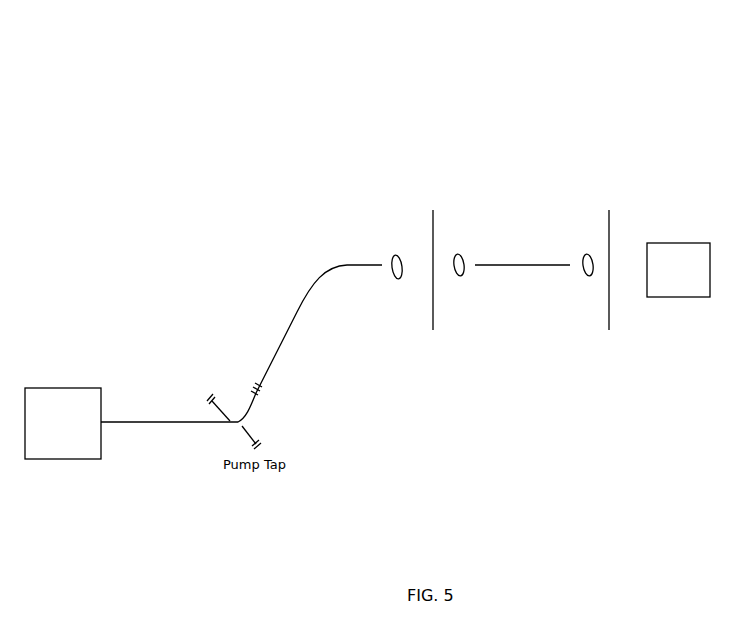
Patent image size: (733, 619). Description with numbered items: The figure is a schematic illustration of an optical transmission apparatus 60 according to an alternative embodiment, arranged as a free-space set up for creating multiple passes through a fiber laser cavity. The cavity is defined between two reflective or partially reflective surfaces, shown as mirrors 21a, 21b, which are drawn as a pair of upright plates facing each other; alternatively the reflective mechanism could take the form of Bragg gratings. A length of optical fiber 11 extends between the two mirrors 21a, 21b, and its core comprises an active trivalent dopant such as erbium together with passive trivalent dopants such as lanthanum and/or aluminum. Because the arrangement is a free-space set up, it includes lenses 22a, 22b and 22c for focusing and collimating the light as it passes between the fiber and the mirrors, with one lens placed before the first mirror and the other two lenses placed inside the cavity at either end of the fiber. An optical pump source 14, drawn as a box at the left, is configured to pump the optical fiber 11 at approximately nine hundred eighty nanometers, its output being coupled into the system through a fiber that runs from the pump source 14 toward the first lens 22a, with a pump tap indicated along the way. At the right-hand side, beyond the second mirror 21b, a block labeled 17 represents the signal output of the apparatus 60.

The apparatus 60 is at (259, 92).
The optical pump source 14 is at (59, 449).
The optical fiber 11 is at (486, 255).
The lens 22a is at (393, 255).
The lens 22b is at (456, 253).
The lens 22c is at (584, 253).
The mirror 21a is at (432, 307).
The mirror 21b is at (609, 298).
The signal output detector 17 is at (672, 240).